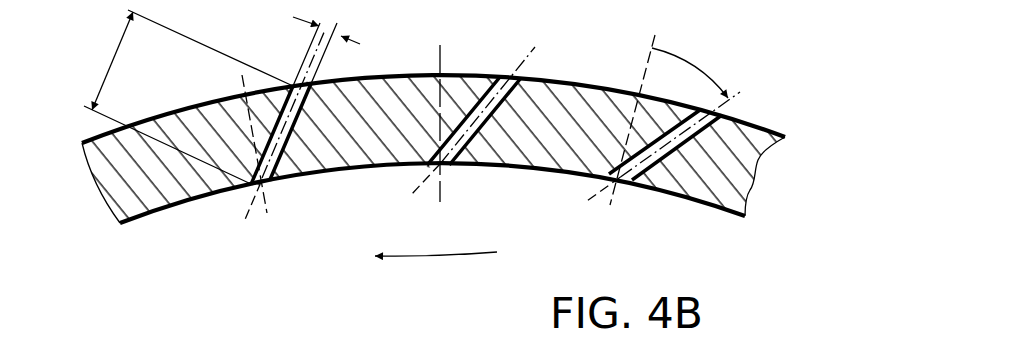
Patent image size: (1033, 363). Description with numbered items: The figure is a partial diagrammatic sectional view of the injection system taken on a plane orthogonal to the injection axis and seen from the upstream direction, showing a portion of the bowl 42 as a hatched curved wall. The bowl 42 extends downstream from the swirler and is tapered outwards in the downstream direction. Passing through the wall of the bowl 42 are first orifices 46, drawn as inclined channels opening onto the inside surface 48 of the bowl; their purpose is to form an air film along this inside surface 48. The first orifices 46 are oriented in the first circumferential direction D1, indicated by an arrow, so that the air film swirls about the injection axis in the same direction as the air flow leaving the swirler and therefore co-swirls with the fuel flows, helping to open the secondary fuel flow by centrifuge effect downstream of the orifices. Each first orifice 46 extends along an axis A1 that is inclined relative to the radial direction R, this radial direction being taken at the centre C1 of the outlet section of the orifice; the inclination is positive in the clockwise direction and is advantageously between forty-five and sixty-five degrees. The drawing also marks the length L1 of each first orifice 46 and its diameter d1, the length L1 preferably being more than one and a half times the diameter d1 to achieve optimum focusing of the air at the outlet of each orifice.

The bowl 42 is at (753, 147).
The first orifices 46 is at (280, 166).
The inside surface 48 is at (545, 173).
The length L1 is at (188, 97).
The diameter d1 is at (311, 22).
The radial direction R is at (440, 56).
The axis A1 is at (528, 56).
The centre C1 is at (441, 164).
The first circumferential direction D1 is at (436, 239).